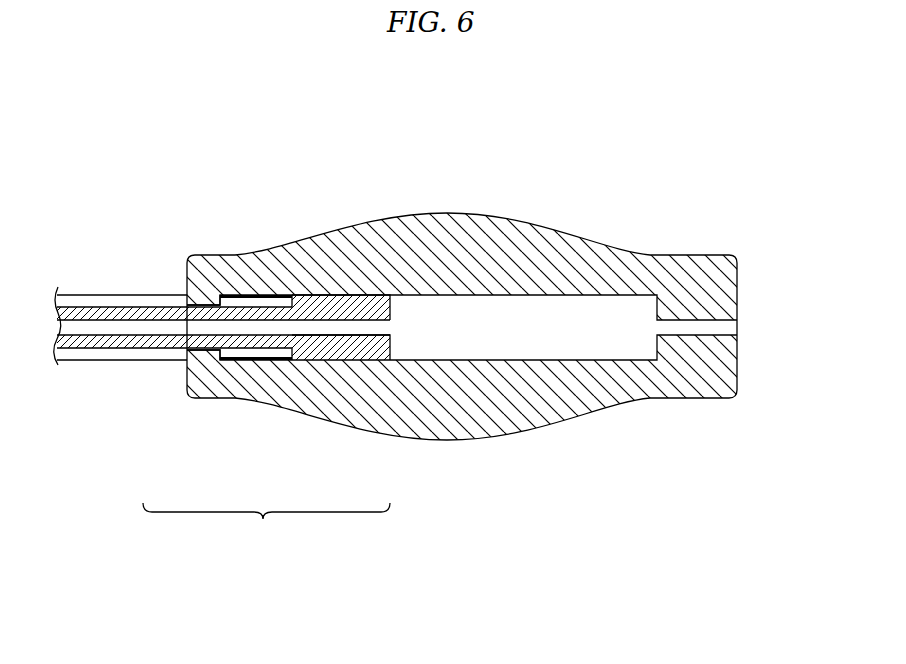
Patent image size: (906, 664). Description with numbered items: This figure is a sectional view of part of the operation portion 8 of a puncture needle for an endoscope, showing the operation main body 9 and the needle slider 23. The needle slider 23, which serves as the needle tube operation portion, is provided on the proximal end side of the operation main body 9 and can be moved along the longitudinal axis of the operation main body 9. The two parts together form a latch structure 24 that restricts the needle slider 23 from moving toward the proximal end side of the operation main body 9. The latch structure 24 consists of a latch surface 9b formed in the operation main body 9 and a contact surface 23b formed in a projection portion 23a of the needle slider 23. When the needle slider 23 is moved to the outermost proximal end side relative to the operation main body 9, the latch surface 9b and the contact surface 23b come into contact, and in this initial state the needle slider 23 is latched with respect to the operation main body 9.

The operation portion 8 is at (220, 180).
The operation main body 9 is at (340, 303).
The latch surface 9b is at (290, 353).
The needle slider 23 is at (532, 422).
The projection portion 23a is at (187, 309).
The contact surface 23b is at (222, 354).
The latch structure 24 is at (266, 526).